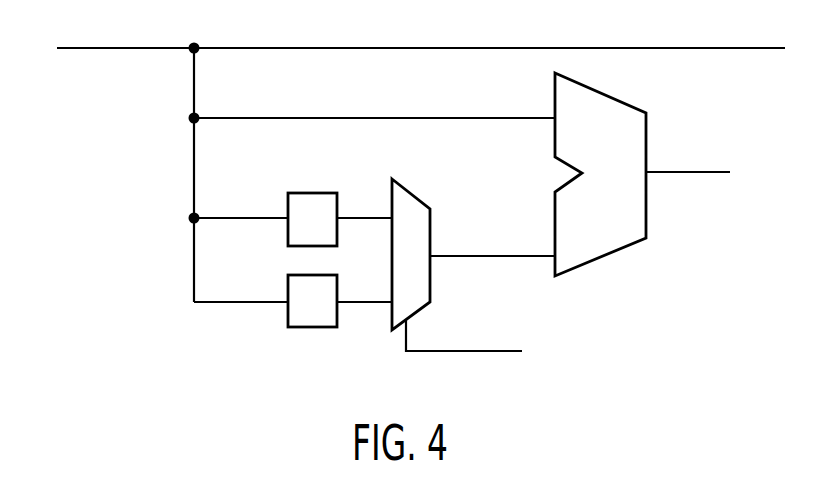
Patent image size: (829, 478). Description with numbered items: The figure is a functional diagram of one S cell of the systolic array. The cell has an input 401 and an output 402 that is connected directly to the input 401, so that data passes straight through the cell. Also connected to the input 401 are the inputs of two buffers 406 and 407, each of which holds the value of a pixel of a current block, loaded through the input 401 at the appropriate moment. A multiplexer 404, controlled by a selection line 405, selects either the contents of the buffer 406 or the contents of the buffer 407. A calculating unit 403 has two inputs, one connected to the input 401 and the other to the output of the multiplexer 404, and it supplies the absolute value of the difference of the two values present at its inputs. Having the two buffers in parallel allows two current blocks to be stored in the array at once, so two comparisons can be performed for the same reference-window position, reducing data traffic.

The input 401 is at (160, 49).
The output 402 is at (678, 47).
The calculating unit 403 is at (607, 92).
The multiplexer 404 is at (413, 192).
The selection line 405 is at (471, 352).
The buffer 406 is at (313, 192).
The buffer 407 is at (287, 315).